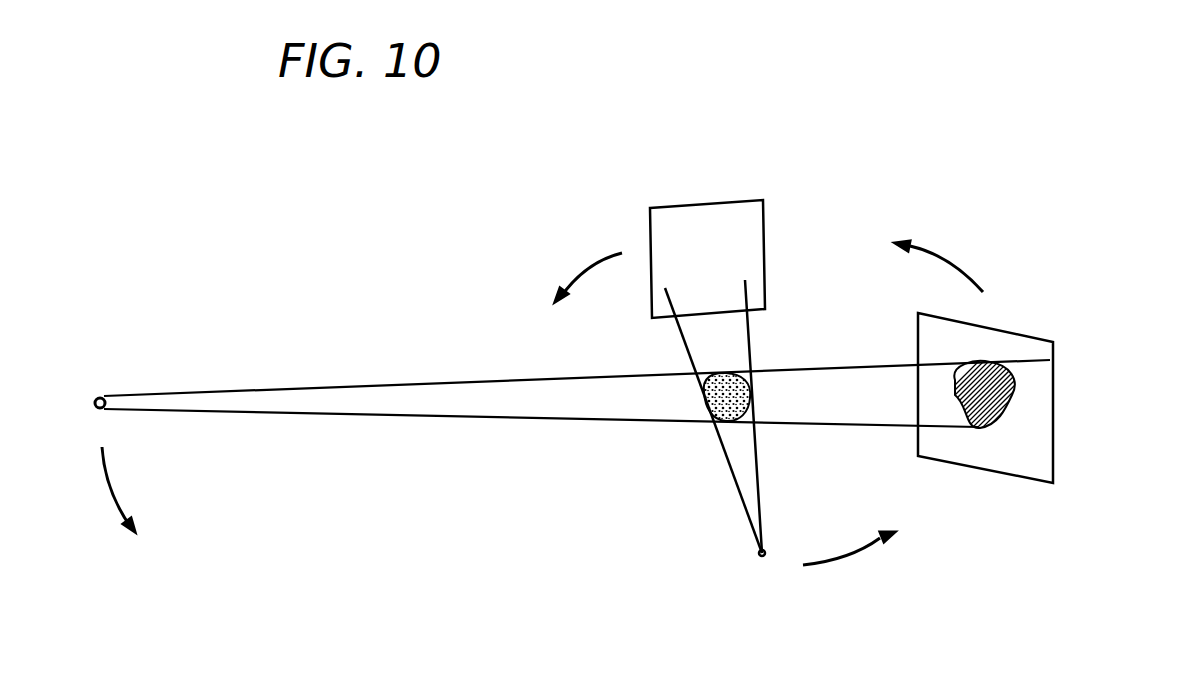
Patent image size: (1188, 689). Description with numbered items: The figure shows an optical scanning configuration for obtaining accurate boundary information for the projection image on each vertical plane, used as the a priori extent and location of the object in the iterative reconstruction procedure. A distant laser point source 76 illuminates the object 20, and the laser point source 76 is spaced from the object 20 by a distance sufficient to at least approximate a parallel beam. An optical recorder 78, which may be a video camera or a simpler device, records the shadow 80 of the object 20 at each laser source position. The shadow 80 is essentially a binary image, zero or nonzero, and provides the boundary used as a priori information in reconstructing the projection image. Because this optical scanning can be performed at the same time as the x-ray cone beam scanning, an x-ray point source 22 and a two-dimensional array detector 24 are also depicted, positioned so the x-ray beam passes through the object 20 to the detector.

The laser point source 76 is at (99, 396).
The two-dimensional array detector 24 is at (712, 215).
The x-ray point source 22 is at (758, 559).
The object 20 is at (706, 420).
The optical recorder 78 is at (1040, 362).
The shadow 80 is at (1010, 405).